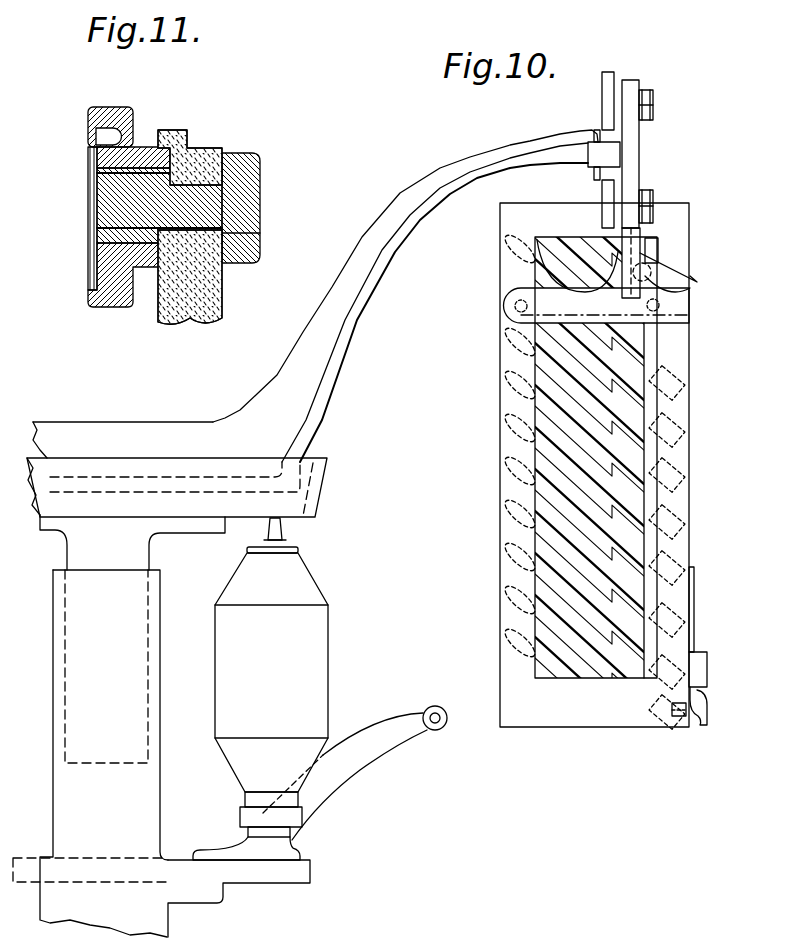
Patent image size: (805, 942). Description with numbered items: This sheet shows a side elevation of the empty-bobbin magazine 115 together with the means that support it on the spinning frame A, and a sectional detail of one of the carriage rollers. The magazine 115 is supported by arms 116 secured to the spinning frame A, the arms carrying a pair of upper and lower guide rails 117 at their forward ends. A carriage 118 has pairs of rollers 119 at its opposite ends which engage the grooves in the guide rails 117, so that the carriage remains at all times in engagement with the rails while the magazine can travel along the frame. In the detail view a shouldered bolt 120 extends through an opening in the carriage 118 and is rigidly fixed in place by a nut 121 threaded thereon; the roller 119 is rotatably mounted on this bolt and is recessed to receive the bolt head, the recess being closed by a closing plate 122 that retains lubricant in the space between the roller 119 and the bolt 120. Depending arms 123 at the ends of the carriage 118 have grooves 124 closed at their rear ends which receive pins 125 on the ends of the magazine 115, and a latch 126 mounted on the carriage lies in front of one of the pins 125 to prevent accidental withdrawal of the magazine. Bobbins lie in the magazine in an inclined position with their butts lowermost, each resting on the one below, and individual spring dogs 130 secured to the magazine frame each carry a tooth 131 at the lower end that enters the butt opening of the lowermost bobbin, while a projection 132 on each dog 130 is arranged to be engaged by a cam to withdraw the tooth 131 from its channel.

In FIG. 10, the magazine 115 is at (566, 465).
In FIG. 10, the arms 116 is at (337, 312).
In FIG. 10, the guide rails 117 is at (593, 177).
In FIG. 11, the carriage 118 is at (200, 298).
In FIG. 10, the carriage 118 is at (640, 162).
In FIG. 11, the rollers 119 is at (112, 107).
In FIG. 10, the rollers 119 is at (602, 112).
In FIG. 11, the shouldered bolt 120 is at (245, 212).
In FIG. 11, the nut 121 is at (247, 254).
In FIG. 11, the closing plate 122 is at (88, 238).
In FIG. 10, the depending arms 123 is at (610, 297).
In FIG. 10, the grooves 124 is at (660, 332).
In FIG. 10, the pins 125 is at (500, 317).
In FIG. 10, the latch 126 is at (697, 282).
In FIG. 10, the spring dogs 130 is at (693, 697).
In FIG. 10, the tooth 131 is at (685, 705).
In FIG. 10, the projection 132 is at (705, 725).
In FIG. 10, the spinning frame A is at (320, 505).